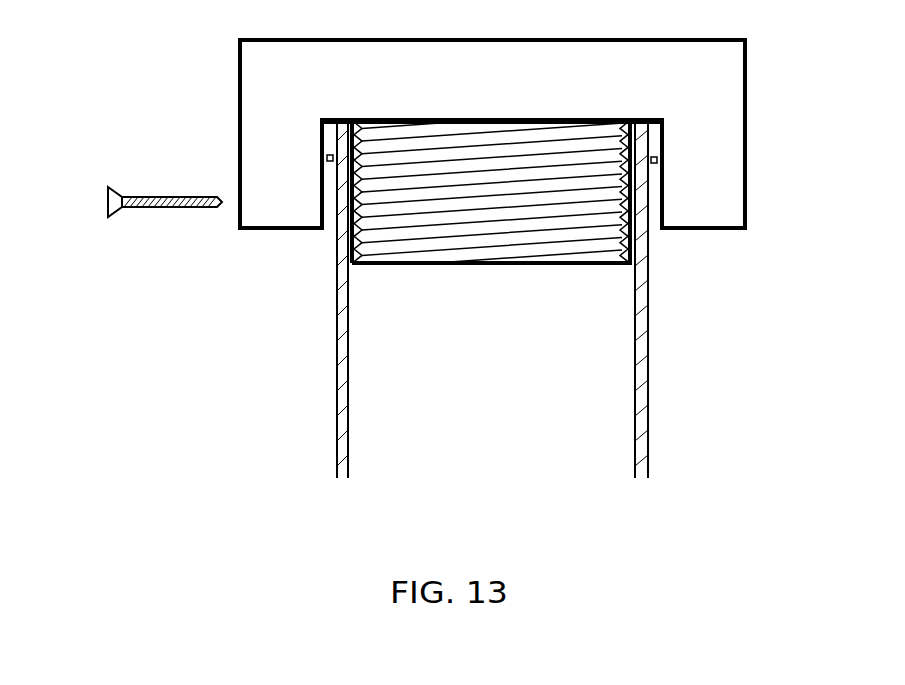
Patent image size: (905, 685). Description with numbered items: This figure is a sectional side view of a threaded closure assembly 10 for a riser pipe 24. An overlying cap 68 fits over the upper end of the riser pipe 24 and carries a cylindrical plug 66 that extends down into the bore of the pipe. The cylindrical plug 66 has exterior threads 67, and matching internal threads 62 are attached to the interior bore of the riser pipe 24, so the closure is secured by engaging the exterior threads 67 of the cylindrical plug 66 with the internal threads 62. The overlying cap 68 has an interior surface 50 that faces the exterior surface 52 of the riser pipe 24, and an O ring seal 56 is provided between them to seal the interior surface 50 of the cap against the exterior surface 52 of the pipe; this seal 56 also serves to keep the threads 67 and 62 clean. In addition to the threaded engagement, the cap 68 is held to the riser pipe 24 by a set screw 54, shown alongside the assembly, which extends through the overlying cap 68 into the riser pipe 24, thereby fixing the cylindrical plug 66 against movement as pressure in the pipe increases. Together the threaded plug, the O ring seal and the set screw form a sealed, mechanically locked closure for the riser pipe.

The mounting assembly 10 is at (197, 78).
The riser pipe 24 is at (338, 390).
The interior surface 50 is at (653, 228).
The exterior surface 52 is at (647, 337).
The set screw 54 is at (158, 183).
The O ring seal 56 is at (660, 158).
The internal threads 62 is at (355, 120).
The cylindrical plug 66 is at (503, 260).
The exterior threads 67 is at (540, 233).
The overlying cap 68 is at (718, 98).